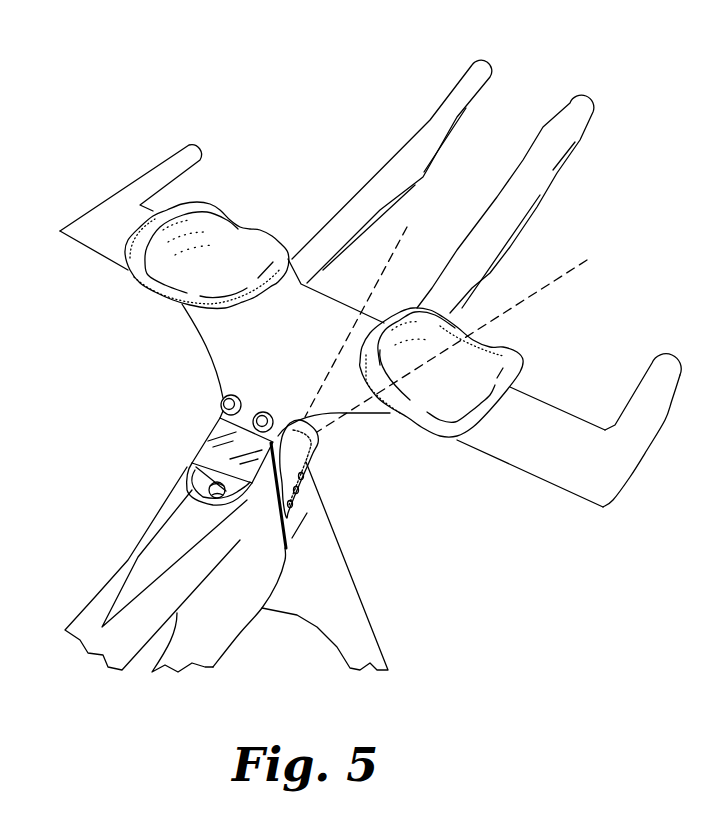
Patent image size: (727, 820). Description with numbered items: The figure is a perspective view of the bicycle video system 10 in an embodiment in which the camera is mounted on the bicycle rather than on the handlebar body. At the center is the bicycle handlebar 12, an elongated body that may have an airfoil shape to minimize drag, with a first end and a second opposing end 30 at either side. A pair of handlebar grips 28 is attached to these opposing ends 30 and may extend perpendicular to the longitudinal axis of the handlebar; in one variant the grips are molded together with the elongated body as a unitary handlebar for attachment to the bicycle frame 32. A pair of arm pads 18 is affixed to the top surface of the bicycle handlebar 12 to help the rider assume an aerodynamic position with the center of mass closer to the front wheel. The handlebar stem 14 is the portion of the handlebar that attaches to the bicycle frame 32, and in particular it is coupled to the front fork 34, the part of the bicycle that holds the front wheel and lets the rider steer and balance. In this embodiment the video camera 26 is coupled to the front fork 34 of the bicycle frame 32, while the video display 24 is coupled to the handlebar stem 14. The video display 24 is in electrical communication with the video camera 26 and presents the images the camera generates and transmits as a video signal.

The bicycle video system 10 is at (289, 94).
The bicycle handlebar 12 is at (522, 462).
The handlebar stem 14 is at (186, 466).
The arm pads 18 is at (233, 243).
The video display 24 is at (212, 433).
The video camera 26 is at (318, 449).
The handlebar grips 28 is at (430, 123).
The opposing ends 30 is at (83, 220).
The bicycle frame 32 is at (132, 557).
The front fork 34 is at (343, 560).